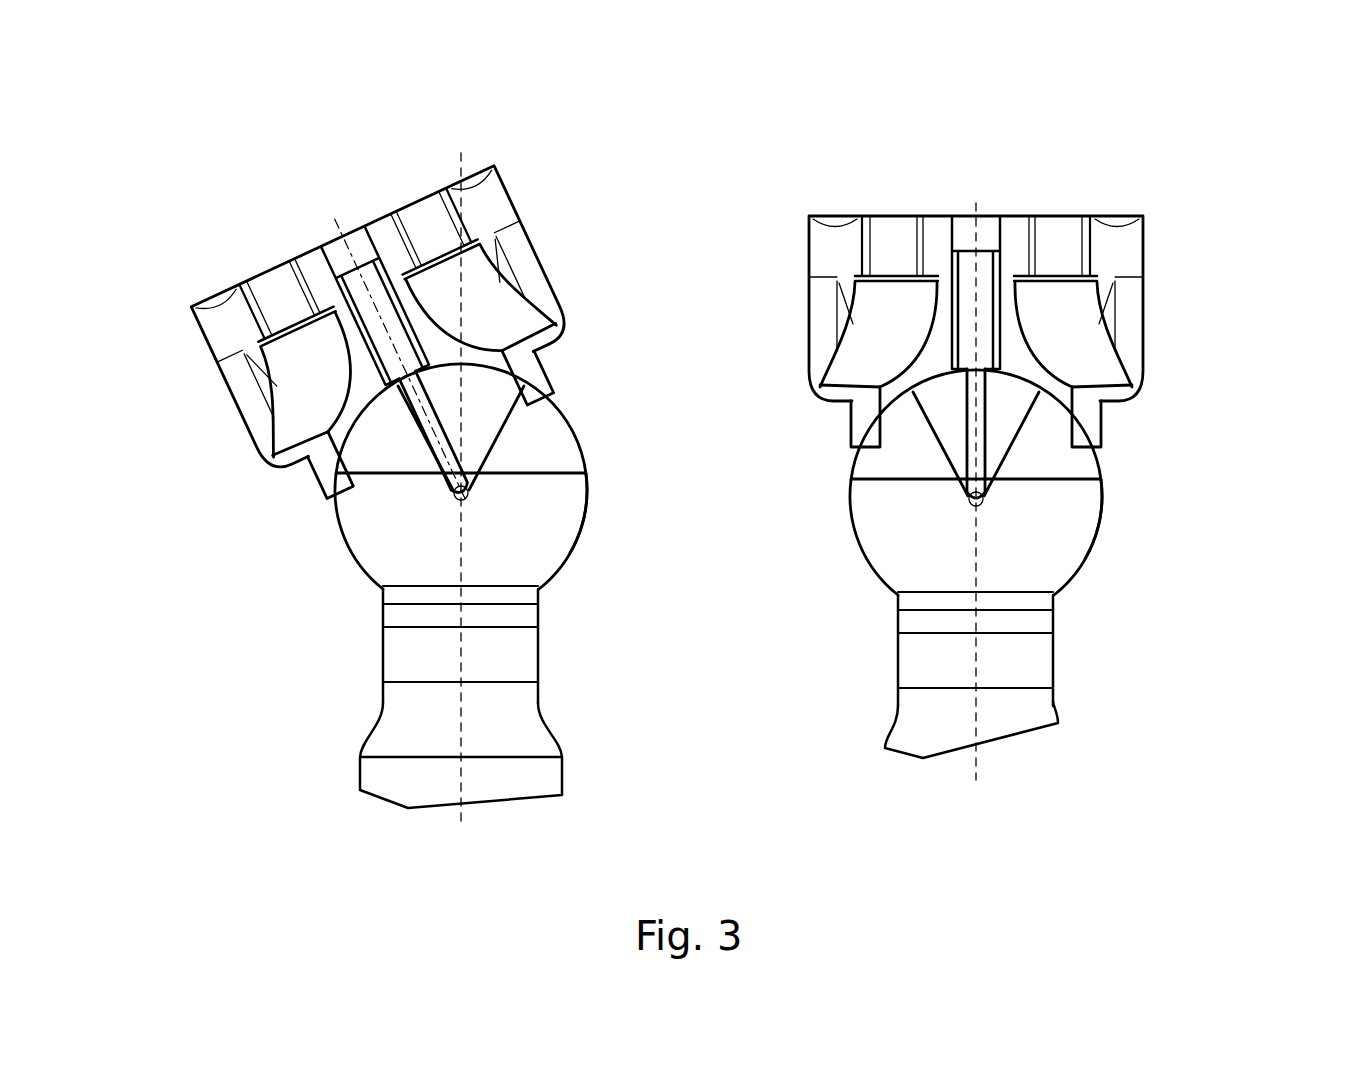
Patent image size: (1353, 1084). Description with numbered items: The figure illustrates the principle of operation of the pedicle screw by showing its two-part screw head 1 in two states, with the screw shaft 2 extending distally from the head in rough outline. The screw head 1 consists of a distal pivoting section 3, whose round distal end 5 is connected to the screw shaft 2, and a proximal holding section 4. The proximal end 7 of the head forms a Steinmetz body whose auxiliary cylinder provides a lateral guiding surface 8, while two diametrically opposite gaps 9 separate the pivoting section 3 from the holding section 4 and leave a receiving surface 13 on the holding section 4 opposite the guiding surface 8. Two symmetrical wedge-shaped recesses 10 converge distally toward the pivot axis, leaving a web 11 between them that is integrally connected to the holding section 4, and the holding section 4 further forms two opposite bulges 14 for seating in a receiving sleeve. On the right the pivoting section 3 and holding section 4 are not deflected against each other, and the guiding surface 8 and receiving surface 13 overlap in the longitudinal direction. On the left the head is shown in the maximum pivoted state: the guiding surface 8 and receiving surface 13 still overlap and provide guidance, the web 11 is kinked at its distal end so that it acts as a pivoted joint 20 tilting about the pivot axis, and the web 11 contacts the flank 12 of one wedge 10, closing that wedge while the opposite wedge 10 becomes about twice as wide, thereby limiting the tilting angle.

The screw head 1 is at (150, 168).
The screw shaft 2 is at (380, 783).
The pivoting section 3 is at (345, 558).
The holding section 4 is at (496, 168).
The distal end 5 is at (512, 540).
The proximal end 7 is at (550, 437).
The guiding surface 8 is at (580, 438).
The gaps 9 is at (330, 498).
The wedge-shaped recesses 10 is at (487, 375).
The web 11 is at (480, 513).
The flanks 12 is at (480, 393).
The receiving surface 13 is at (362, 458).
The bulges 14 is at (558, 328).
The pivoted joint 20 is at (480, 530).